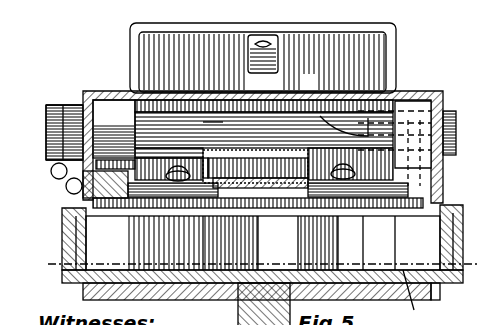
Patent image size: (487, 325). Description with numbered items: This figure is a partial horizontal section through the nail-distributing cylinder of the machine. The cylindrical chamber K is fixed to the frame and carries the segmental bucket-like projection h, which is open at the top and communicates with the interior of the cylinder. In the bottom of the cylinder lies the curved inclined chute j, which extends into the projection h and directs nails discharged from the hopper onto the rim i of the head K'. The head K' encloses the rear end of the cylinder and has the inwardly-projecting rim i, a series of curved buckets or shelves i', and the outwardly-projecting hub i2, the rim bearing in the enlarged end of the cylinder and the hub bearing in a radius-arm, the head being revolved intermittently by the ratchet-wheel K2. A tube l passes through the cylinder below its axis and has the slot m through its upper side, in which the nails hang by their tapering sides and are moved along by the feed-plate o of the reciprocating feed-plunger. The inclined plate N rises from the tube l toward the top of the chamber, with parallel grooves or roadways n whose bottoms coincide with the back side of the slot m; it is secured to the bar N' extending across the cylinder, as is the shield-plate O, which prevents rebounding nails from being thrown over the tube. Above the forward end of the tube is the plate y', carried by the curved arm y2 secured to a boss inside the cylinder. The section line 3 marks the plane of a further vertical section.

The bucket-like projection h is at (259, 58).
The curved inclined chute j is at (272, 61).
The cylindrical chamber K is at (249, 145).
The tube l is at (300, 120).
The slot m is at (455, 122).
The feed-plate o is at (196, 130).
The shield-plate O is at (255, 163).
The grooves or roadways n is at (260, 171).
The inclined plate N is at (235, 170).
The bar N' is at (268, 187).
The plate y' is at (344, 128).
The curved arm y2 is at (384, 141).
The inwardly-projecting rim i is at (262, 244).
The curved buckets or shelves i' is at (263, 243).
The section line 3 3 is at (257, 265).
The ratchet-wheel K2 is at (75, 293).
The head K' is at (418, 297).
The outwardly-projecting hub i2 is at (232, 300).